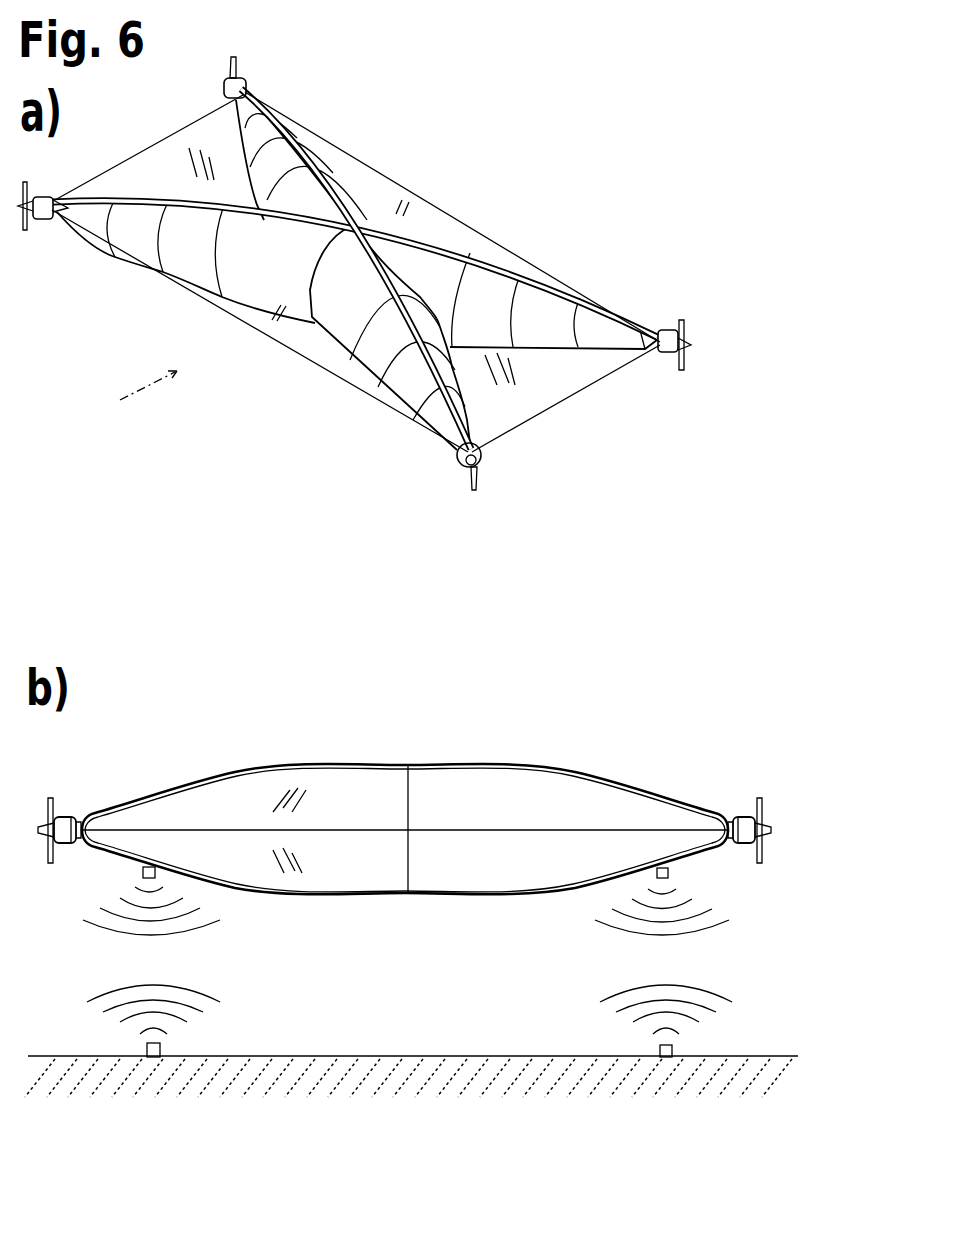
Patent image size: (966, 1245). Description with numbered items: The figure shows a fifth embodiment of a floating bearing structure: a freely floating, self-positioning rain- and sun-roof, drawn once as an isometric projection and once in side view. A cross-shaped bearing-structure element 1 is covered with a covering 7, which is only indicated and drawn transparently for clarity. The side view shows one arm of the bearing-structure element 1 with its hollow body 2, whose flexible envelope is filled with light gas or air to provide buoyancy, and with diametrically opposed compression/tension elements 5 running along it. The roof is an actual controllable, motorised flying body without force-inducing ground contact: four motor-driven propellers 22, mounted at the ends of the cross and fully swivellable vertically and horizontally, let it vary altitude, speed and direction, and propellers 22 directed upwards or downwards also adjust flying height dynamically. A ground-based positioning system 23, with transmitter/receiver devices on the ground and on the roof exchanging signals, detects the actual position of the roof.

In FIG. 6a, the bearing-structure element 1 is at (305, 333).
In FIG. 6b, the hollow body 2 is at (232, 810).
In FIG. 6b, the compression/tension element 5 is at (375, 891).
In FIG. 6a, the covering 7 is at (417, 194).
In FIG. 6a, the motor-driven propeller 22 is at (238, 83).
In FIG. 6b, the motor-driven propeller 22 is at (69, 818).
In FIG. 6b, the positioning system 23 is at (667, 876).